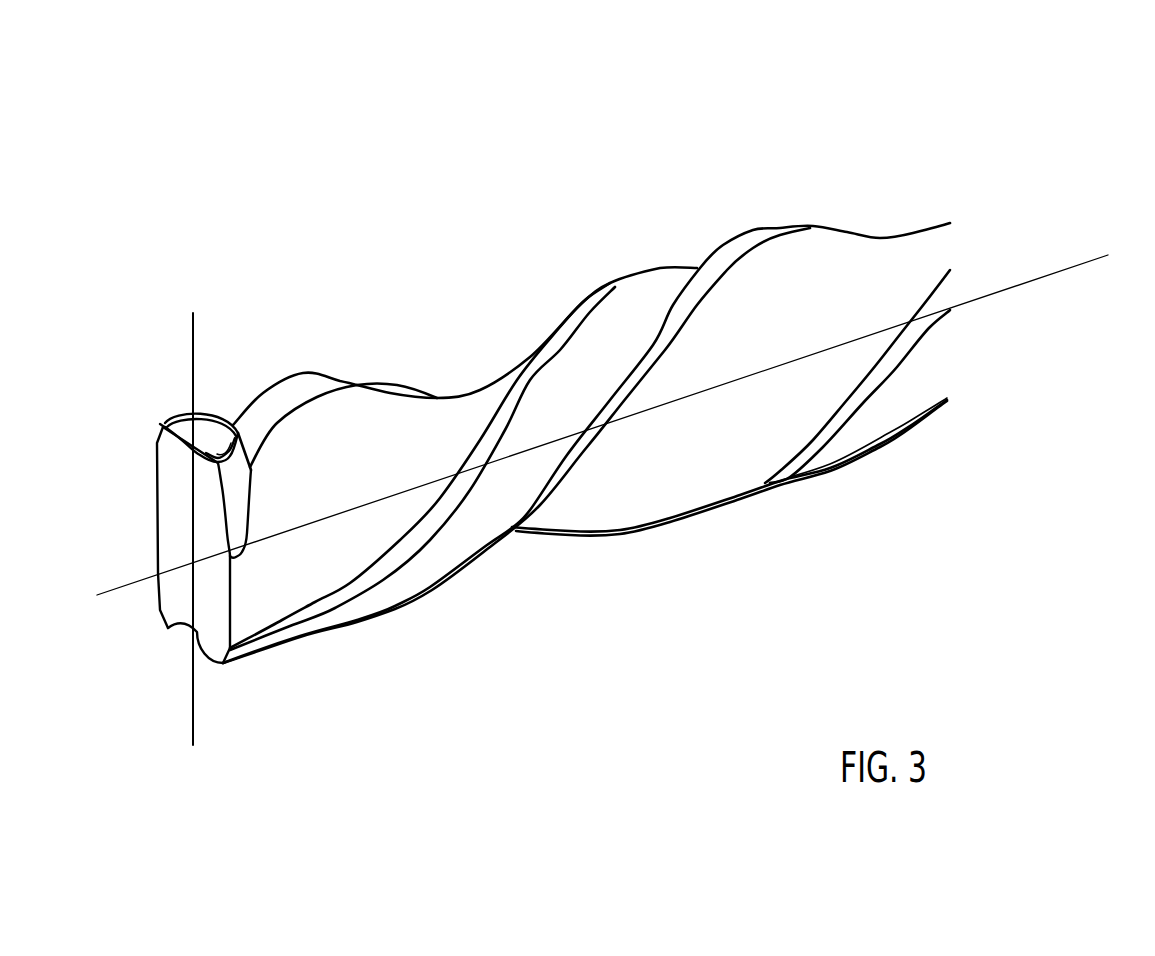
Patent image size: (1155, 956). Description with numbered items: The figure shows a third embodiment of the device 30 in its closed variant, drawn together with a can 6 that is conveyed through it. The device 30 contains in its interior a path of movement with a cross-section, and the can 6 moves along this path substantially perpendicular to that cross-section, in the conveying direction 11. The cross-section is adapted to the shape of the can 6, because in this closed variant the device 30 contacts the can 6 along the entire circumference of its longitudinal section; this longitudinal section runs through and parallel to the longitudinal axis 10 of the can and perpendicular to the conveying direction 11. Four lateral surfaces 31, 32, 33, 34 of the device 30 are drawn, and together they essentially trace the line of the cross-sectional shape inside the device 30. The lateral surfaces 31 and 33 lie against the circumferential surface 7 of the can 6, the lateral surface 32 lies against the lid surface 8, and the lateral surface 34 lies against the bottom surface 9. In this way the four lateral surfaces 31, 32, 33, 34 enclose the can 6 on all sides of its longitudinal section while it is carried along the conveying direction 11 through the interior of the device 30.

The can 6 is at (181, 553).
The circumferential surface 7 is at (158, 518).
The lid surface 8 is at (163, 425).
The bottom surface 9 is at (187, 635).
The longitudinal axis 10 is at (193, 725).
The conveying direction 11 is at (1058, 273).
The device 30 is at (913, 153).
The lateral surface 31 is at (310, 580).
The lateral surface 32 is at (226, 413).
The lateral surface 33 is at (693, 473).
The lateral surface 34 is at (493, 507).